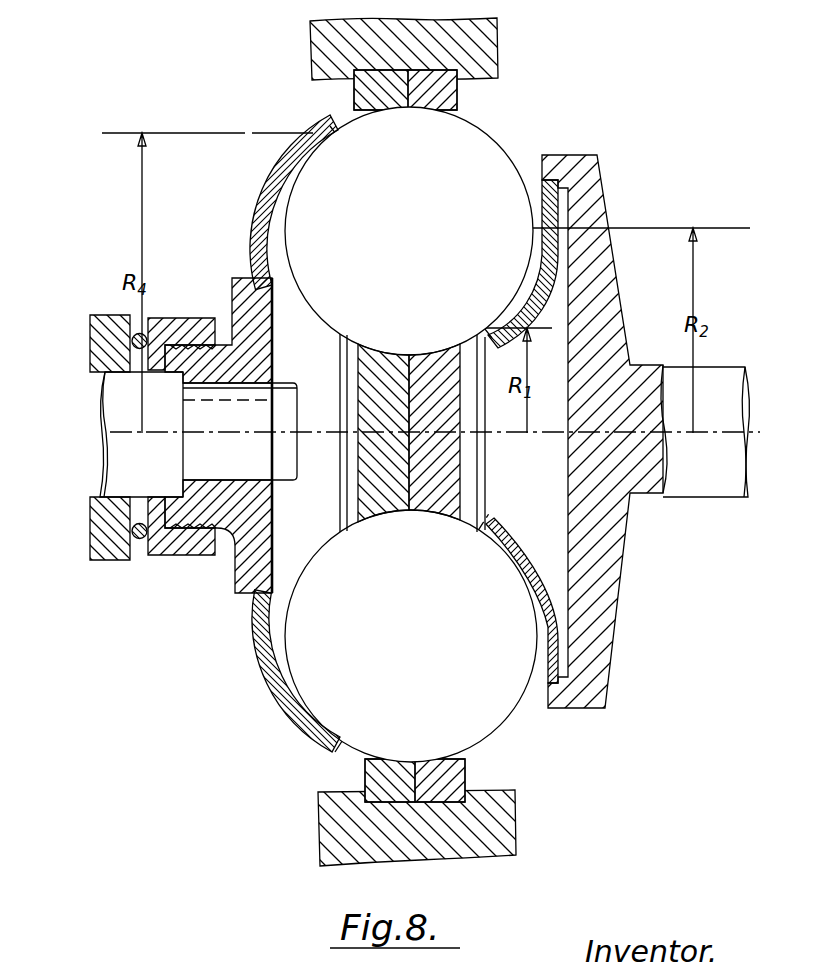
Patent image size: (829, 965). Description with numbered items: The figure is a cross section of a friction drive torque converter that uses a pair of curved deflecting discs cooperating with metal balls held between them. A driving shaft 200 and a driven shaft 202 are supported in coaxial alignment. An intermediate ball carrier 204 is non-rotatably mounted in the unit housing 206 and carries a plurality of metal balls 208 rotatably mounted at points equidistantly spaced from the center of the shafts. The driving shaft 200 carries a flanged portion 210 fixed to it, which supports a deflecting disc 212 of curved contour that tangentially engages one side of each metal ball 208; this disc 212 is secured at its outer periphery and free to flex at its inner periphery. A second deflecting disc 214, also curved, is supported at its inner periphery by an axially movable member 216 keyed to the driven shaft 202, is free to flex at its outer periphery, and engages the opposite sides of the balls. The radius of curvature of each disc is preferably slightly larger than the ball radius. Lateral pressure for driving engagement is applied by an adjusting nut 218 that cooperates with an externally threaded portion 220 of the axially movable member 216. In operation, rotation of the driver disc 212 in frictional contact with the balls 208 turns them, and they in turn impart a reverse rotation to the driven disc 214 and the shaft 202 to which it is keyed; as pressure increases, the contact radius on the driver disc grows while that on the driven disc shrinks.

The driving shaft 200 is at (720, 368).
The driven shaft 202 is at (105, 488).
The intermediate ball carrier 204 is at (457, 100).
The unit housing 206 is at (497, 45).
The metal balls 208 is at (485, 143).
The flanged portion 210 is at (608, 267).
The deflecting disc 212 is at (540, 256).
The second deflecting disc 214 is at (262, 200).
The axially movable member 216 is at (237, 278).
The adjusting nut 218 is at (148, 322).
The externally threaded portion 220 is at (223, 530).